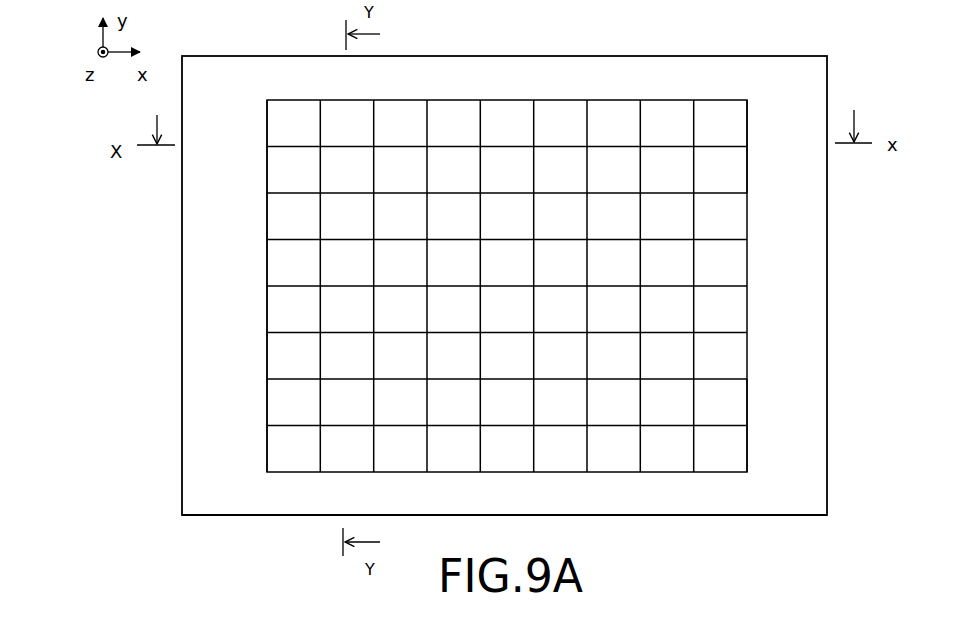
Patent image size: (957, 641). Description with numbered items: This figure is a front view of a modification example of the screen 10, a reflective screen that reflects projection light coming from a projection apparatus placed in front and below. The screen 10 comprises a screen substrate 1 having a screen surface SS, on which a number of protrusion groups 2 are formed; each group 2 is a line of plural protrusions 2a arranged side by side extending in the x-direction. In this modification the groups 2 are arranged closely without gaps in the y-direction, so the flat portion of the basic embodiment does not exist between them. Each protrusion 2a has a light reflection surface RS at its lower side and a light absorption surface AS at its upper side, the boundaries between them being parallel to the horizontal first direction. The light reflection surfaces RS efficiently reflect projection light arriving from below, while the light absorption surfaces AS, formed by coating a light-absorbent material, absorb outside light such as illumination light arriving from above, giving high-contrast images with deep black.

The screen 10 is at (843, 42).
The screen substrate 1 is at (828, 100).
The screen surface SS is at (820, 500).
The protrusion 2a is at (625, 104).
The protrusion group 2 is at (262, 101).
The light absorption surface AS is at (748, 127).
The light reflection surface RS is at (748, 165).